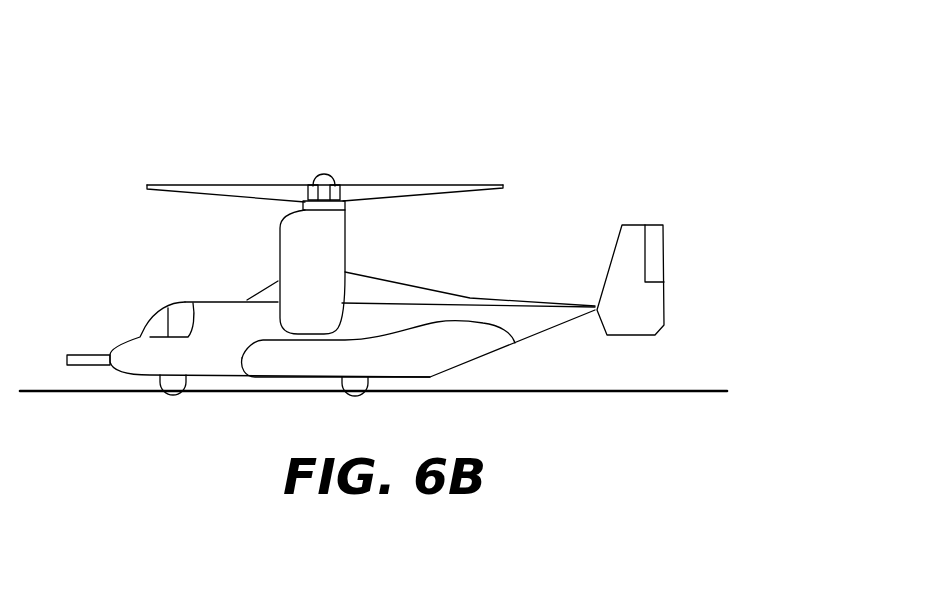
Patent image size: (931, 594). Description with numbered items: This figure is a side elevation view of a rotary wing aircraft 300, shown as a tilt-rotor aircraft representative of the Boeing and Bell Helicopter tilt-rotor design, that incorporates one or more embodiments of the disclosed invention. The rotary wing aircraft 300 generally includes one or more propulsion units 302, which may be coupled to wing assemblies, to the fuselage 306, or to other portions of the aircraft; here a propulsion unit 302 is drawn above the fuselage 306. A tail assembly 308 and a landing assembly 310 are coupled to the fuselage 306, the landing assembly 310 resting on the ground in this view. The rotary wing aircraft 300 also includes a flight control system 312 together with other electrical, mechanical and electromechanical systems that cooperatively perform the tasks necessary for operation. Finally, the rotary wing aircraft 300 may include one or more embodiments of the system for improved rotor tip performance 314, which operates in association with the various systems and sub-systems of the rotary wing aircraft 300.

The rotary wing aircraft 300 is at (700, 168).
The propulsion unit 302 is at (345, 250).
The fuselage 306 is at (490, 297).
The tail assembly 308 is at (683, 283).
The landing assembly 310 is at (178, 392).
The flight control system 312 is at (146, 298).
The system for improved rotor tip performance 314 is at (500, 184).